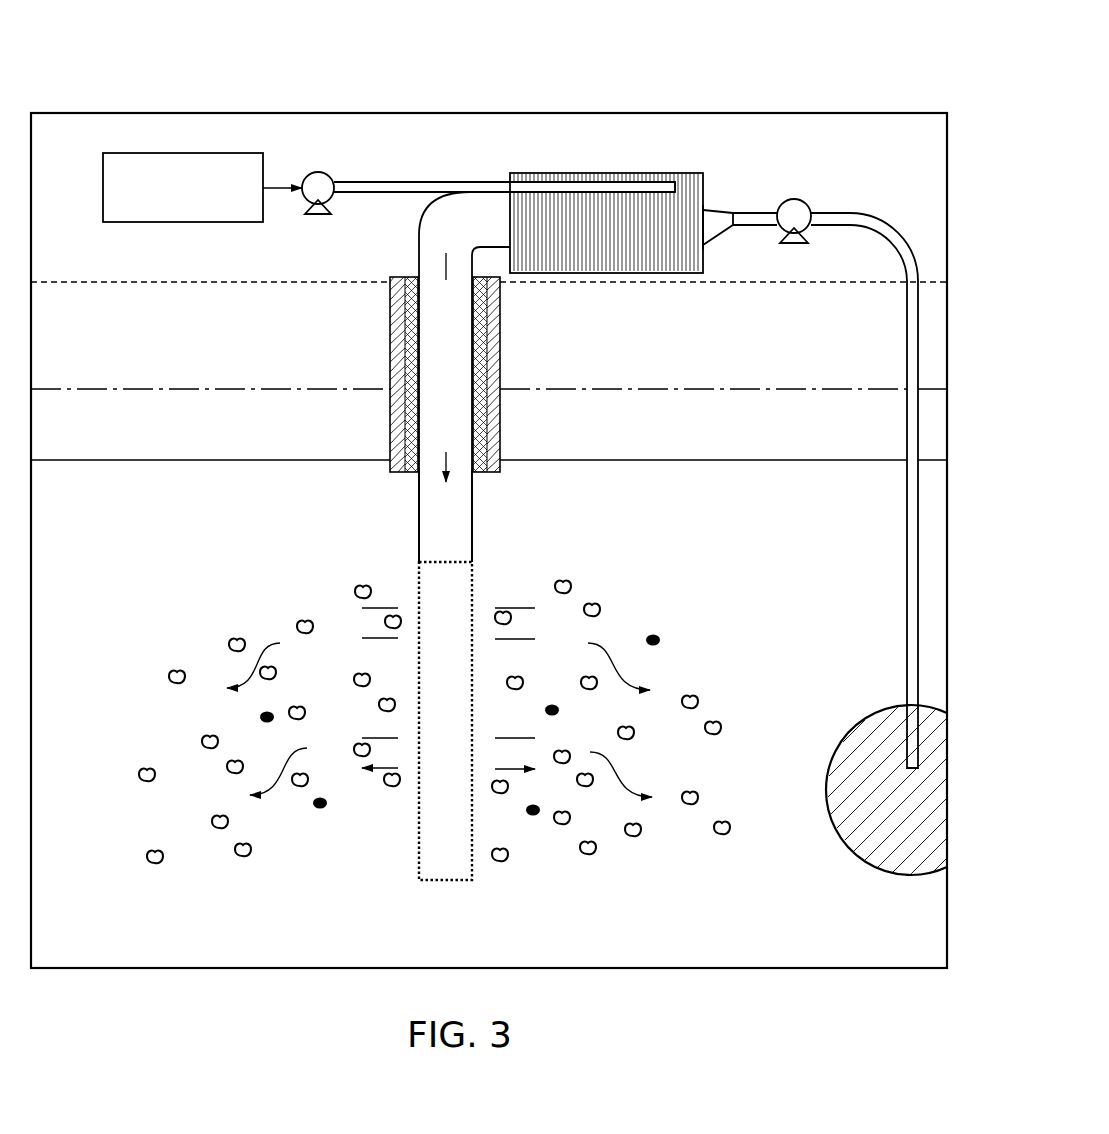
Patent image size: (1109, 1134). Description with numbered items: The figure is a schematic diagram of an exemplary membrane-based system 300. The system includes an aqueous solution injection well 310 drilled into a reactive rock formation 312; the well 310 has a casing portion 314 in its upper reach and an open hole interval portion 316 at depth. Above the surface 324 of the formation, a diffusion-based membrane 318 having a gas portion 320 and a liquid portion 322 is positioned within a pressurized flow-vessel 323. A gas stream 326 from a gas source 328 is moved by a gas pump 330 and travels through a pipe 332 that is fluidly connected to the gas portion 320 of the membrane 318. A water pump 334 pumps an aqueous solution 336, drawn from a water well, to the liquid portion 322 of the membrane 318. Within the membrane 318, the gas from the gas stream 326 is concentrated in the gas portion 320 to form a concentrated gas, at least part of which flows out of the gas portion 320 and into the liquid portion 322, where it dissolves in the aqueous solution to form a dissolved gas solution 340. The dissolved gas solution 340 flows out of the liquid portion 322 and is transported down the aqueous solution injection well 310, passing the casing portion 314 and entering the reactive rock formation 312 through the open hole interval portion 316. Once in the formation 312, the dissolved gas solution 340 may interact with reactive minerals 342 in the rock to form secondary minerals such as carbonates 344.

The membrane-based system 300 is at (489, 488).
The aqueous solution injection well 310 is at (575, 593).
The reactive rock formation 312 is at (489, 525).
The casing portion 314 is at (511, 374).
The open hole interval portion 316 is at (396, 732).
The diffusion-based membrane 318 is at (606, 174).
The gas portion 320 is at (732, 159).
The liquid portion 322 is at (760, 199).
The pressurized flow-vessel 323 is at (762, 208).
The surface 324 is at (489, 230).
The gas stream 326 is at (274, 135).
The gas source 328 is at (183, 139).
The gas pump 330 is at (342, 148).
The pipe 332 is at (504, 137).
The water pump 334 is at (852, 200).
The aqueous solution 336 is at (842, 790).
The dissolved gas solution 340 is at (416, 377).
The reactive minerals 342 is at (434, 703).
The carbonates 344 is at (401, 725).